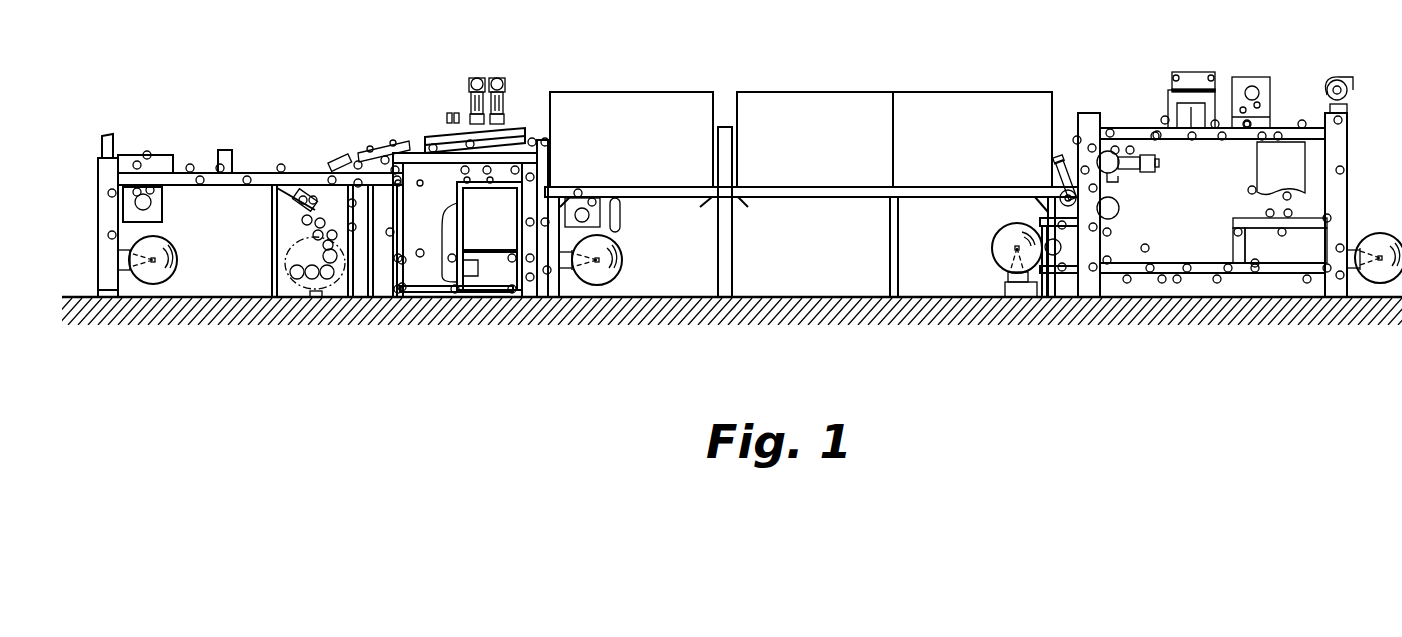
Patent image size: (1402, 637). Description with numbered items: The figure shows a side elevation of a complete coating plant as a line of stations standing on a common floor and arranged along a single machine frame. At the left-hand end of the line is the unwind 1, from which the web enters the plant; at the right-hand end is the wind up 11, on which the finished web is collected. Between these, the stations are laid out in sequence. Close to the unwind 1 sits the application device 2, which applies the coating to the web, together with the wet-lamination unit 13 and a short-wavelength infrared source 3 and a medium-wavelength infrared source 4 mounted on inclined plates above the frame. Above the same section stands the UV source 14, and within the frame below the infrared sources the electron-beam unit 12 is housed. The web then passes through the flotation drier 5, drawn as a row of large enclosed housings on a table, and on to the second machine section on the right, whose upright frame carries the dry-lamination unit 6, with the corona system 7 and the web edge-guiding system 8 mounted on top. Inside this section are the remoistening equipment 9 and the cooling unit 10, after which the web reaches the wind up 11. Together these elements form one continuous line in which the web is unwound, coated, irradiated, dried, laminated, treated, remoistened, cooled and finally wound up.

The unwind 1 is at (163, 285).
The application device 2 is at (323, 283).
The short-wavelength infrared source 3 is at (340, 158).
The medium-wavelength infrared source 4 is at (396, 143).
The flotation drier 5 is at (655, 110).
The dry-lamination unit 6 is at (1097, 123).
The corona system 7 is at (1250, 88).
The web edge-guiding system 8 is at (1190, 85).
The remoistening equipment 9 is at (1268, 165).
The cooling unit 10 is at (1263, 240).
The wind up 11 is at (1000, 262).
The electron-beam unit 12 is at (490, 232).
The wet-lamination unit 13 is at (308, 190).
The UV source 14 is at (498, 75).